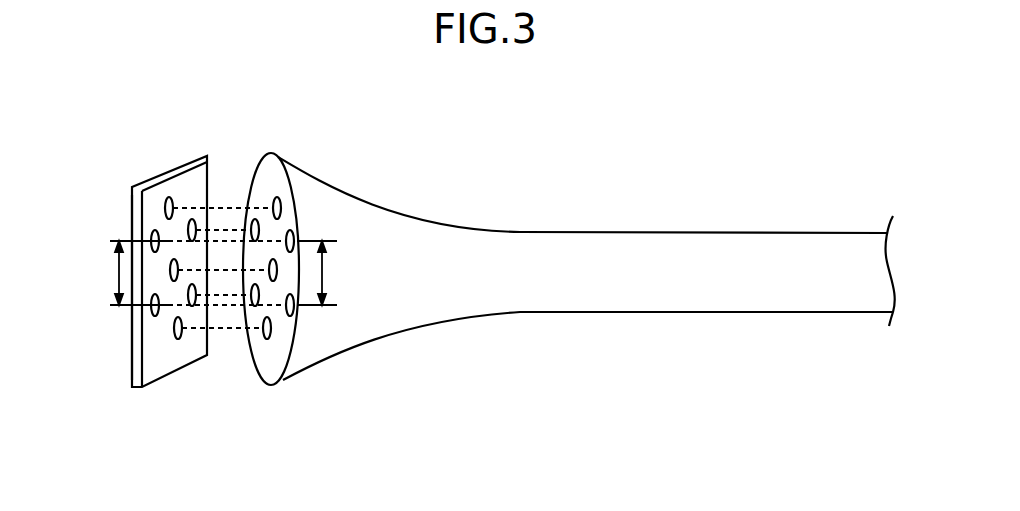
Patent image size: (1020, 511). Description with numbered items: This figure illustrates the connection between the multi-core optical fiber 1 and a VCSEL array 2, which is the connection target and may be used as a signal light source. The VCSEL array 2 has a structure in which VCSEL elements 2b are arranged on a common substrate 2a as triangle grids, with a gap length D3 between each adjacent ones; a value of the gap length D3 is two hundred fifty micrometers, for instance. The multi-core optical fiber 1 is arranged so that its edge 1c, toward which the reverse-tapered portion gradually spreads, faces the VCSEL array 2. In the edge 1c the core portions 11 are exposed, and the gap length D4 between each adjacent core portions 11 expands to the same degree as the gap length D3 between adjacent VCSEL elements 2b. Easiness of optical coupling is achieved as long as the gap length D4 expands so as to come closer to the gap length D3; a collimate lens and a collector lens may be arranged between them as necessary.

The multi-core optical fiber 1 is at (608, 152).
The edge 1c is at (262, 182).
The core portion 11 is at (285, 197).
The VCSEL array 2 is at (168, 142).
The plate surface 2a is at (130, 218).
The VCSEL element 2b is at (178, 342).
The gap length D3 is at (118, 275).
The gap length D4 is at (324, 272).